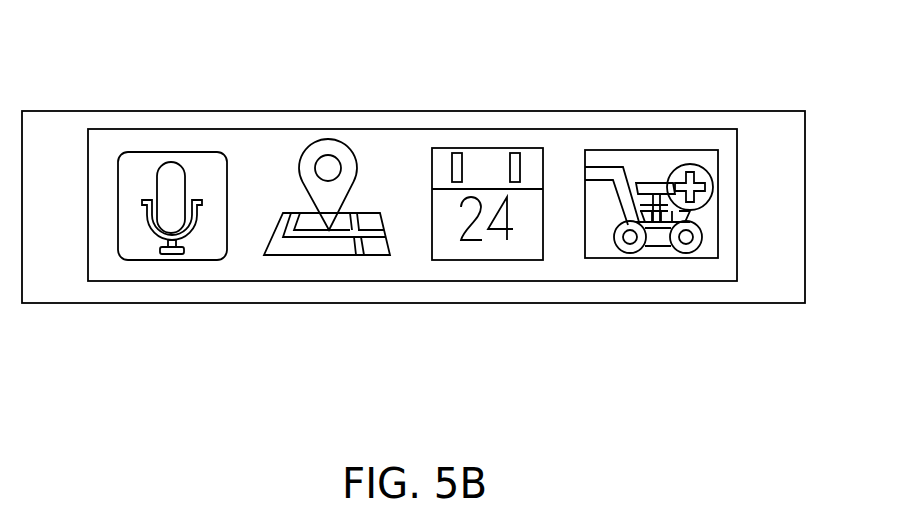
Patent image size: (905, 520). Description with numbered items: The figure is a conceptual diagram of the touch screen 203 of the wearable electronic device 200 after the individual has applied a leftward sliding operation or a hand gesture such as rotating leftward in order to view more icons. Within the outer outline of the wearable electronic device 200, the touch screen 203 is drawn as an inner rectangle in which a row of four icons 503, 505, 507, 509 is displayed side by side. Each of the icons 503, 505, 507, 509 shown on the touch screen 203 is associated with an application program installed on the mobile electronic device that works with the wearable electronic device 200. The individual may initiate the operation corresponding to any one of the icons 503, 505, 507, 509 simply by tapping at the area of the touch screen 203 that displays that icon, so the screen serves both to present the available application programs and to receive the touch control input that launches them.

The wearable electronic device 200 is at (53, 152).
The touch screen 203 is at (310, 128).
The icon 503 is at (173, 263).
The icon 505 is at (340, 263).
The icon 507 is at (484, 263).
The icon 509 is at (658, 263).